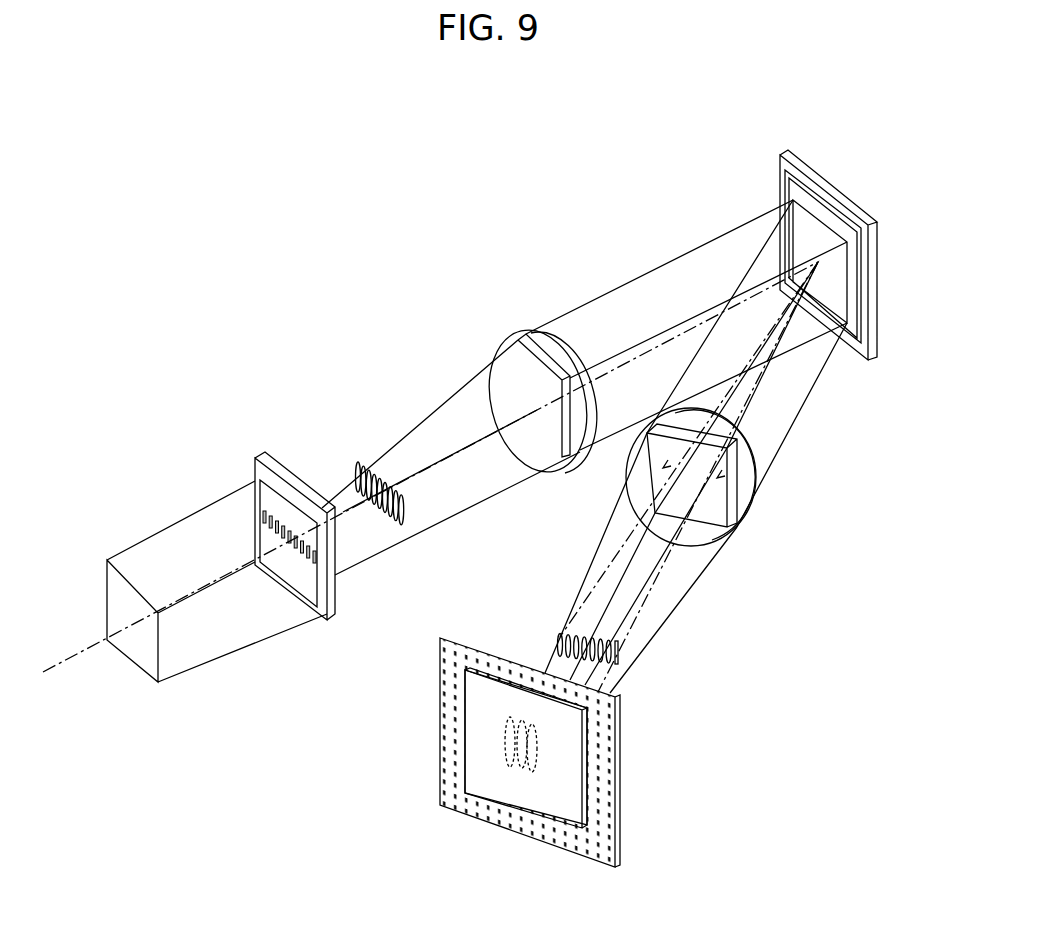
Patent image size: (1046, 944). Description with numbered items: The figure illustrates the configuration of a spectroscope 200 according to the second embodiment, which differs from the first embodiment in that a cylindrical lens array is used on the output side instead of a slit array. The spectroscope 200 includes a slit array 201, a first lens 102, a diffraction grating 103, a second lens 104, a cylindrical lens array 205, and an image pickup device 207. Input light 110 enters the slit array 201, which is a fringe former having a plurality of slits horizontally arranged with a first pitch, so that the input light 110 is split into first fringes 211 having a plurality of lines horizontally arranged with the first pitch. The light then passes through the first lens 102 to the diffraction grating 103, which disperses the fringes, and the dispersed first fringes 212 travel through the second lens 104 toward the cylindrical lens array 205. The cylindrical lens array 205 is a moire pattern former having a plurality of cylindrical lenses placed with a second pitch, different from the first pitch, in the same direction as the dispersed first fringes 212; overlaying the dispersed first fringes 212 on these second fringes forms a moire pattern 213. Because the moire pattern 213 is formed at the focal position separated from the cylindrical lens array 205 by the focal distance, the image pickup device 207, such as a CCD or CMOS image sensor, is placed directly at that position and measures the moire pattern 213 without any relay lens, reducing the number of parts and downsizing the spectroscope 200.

The spectroscope 200 is at (536, 157).
The input light 110 is at (210, 632).
The slit array 201 is at (253, 468).
The first fringes 211 is at (355, 462).
The first lens 102 is at (508, 342).
The diffraction grating 103 is at (788, 188).
The second lens 104 is at (733, 532).
The dispersed first fringes 212 is at (620, 650).
The cylindrical lens array 205 is at (620, 735).
The image pickup device 207 is at (462, 748).
The moire pattern 213 is at (547, 745).